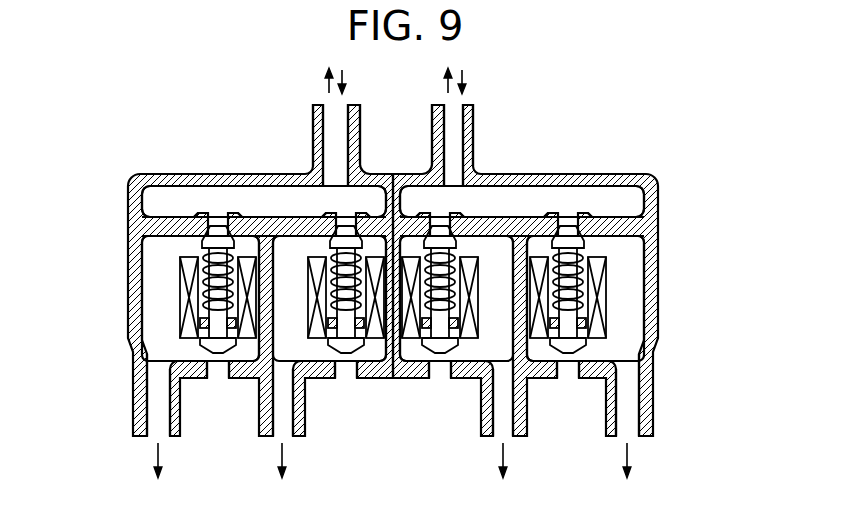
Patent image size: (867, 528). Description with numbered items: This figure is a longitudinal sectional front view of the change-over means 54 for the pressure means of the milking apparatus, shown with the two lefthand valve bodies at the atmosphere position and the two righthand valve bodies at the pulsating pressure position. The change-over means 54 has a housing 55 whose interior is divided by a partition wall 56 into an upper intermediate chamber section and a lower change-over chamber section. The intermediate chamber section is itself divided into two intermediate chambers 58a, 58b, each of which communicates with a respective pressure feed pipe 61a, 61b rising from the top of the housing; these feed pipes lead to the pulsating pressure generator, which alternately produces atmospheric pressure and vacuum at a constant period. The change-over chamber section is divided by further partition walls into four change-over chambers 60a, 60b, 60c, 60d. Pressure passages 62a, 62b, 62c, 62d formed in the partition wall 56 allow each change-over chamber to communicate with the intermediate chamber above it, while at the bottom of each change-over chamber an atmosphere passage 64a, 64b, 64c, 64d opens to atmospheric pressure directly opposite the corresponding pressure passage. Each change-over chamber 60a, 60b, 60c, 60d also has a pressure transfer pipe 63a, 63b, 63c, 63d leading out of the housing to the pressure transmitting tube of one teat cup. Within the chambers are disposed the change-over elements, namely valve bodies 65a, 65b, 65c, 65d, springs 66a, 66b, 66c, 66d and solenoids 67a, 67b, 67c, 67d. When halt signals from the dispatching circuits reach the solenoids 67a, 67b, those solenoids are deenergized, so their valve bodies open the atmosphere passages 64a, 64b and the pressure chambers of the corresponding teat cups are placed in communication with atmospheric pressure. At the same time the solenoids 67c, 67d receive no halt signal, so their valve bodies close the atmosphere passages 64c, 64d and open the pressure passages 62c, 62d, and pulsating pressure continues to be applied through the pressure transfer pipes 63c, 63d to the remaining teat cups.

The change-over means 54 is at (121, 170).
The housing 55 is at (662, 226).
The partition wall 56 is at (168, 228).
The intermediate chamber 58a is at (153, 200).
The intermediate chamber 58b is at (641, 200).
The change-over chamber 60a is at (153, 320).
The change-over chamber 60b is at (281, 247).
The change-over chamber 60c is at (503, 250).
The change-over chamber 60d is at (627, 302).
The pressure feed pipe 61a is at (360, 110).
The pressure feed pipe 61b is at (481, 118).
The pressure passage 62a is at (220, 228).
The pressure passage 62b is at (322, 243).
The pressure passage 62c is at (446, 230).
The pressure passage 62d is at (570, 243).
The pressure transfer pipe 63a is at (155, 430).
The pressure transfer pipe 63b is at (277, 430).
The pressure transfer pipe 63c is at (498, 425).
The pressure transfer pipe 63d is at (630, 427).
The atmosphere passage 64a is at (217, 372).
The atmosphere passage 64b is at (350, 373).
The atmosphere passage 64c is at (443, 373).
The atmosphere passage 64d is at (575, 377).
The valve body 65a is at (212, 216).
The valve body 65b is at (368, 216).
The valve body 65c is at (430, 224).
The valve body 65d is at (560, 222).
The spring 66a is at (182, 270).
The spring 66b is at (335, 278).
The spring 66c is at (468, 284).
The spring 66d is at (610, 282).
The solenoid 67a is at (197, 340).
The solenoid 67b is at (327, 342).
The solenoid 67c is at (425, 345).
The solenoid 67d is at (550, 345).